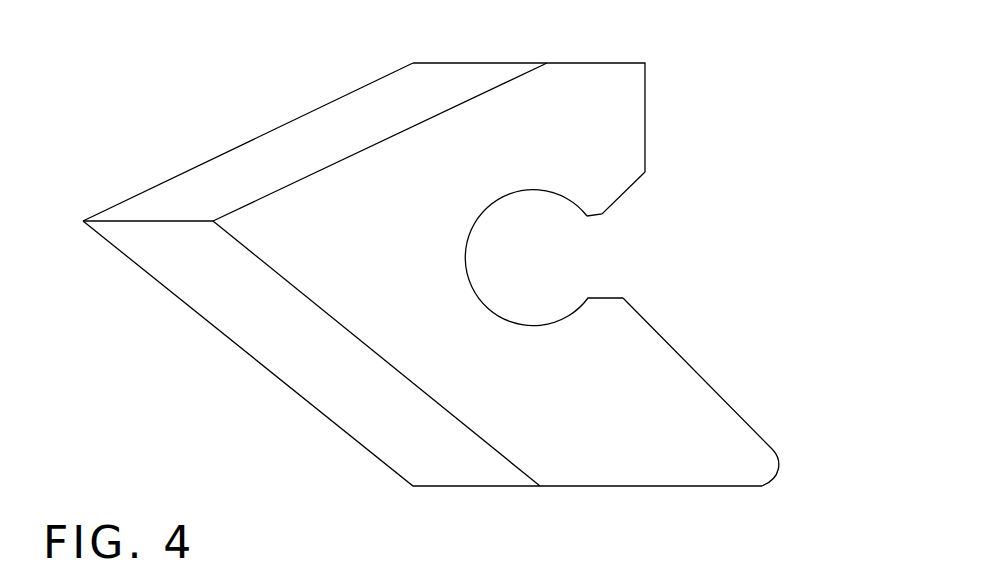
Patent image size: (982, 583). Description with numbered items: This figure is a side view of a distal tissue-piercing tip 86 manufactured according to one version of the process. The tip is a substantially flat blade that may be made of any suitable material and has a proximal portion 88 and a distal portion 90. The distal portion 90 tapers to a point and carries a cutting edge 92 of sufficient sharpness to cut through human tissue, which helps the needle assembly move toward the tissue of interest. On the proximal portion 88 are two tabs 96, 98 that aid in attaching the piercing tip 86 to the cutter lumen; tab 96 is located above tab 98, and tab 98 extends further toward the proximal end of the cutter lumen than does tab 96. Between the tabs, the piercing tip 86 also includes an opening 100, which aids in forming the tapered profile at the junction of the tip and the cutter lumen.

The distal tissue-piercing tip 86 is at (165, 110).
The proximal portion 88 is at (652, 220).
The distal portion 90 is at (83, 221).
The cutting edge 92 is at (310, 372).
The tab 96 is at (607, 77).
The tab 98 is at (737, 443).
The opening 100 is at (538, 272).